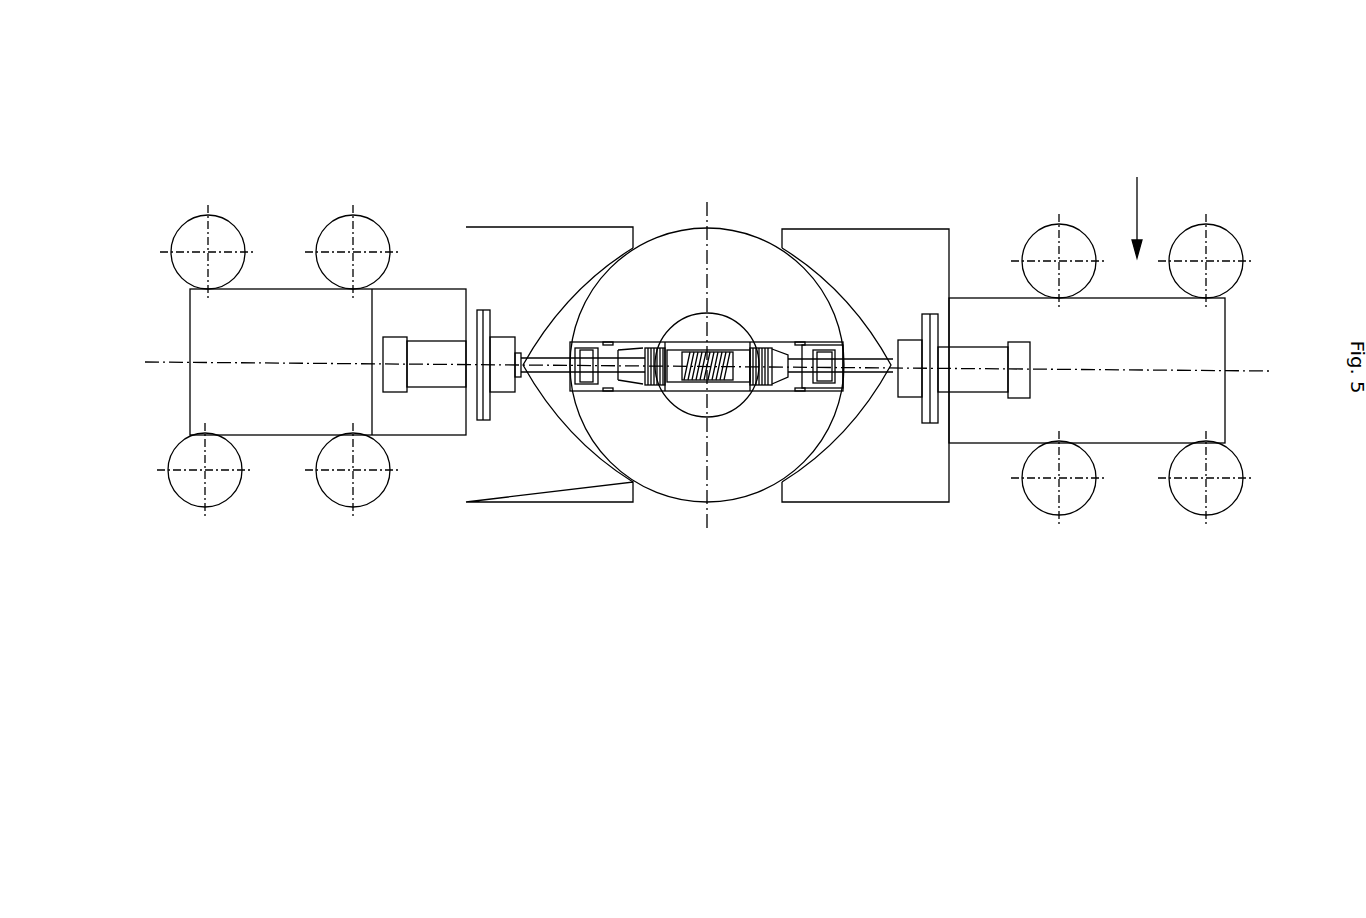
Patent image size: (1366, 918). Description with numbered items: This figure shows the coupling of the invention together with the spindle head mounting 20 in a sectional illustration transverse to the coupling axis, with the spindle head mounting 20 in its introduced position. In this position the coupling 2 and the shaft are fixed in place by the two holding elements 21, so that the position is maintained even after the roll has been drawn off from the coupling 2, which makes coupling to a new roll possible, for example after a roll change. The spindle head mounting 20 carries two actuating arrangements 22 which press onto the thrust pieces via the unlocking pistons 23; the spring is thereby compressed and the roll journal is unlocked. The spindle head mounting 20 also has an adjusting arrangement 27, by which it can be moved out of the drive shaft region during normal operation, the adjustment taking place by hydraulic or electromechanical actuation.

The coupling 2 is at (682, 456).
The spindle head mounting 20 is at (473, 205).
The holding elements 21 is at (889, 274).
The actuating arrangements 22 is at (993, 385).
The unlocking pistons 23 is at (798, 369).
The adjusting arrangement 27 is at (1135, 197).